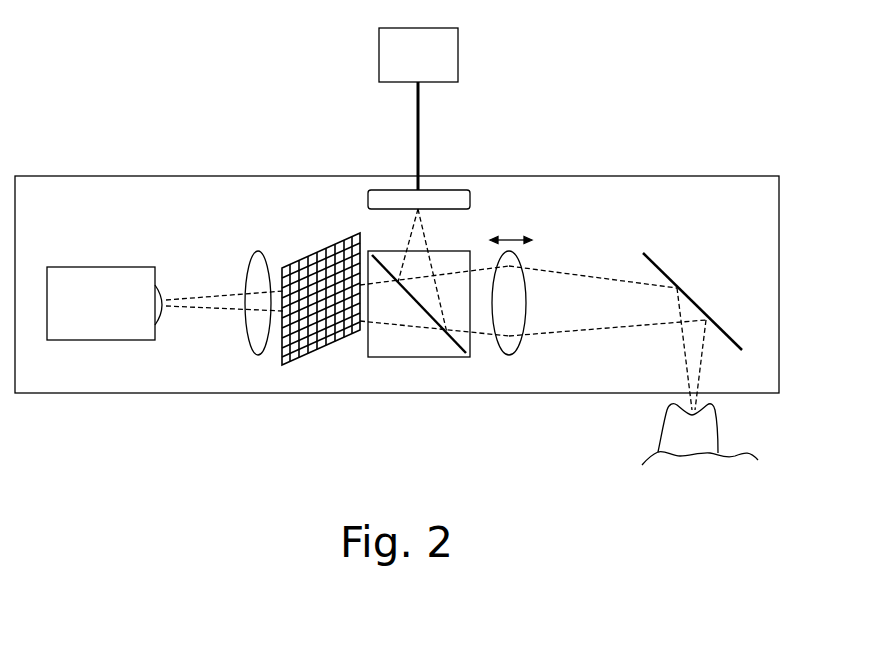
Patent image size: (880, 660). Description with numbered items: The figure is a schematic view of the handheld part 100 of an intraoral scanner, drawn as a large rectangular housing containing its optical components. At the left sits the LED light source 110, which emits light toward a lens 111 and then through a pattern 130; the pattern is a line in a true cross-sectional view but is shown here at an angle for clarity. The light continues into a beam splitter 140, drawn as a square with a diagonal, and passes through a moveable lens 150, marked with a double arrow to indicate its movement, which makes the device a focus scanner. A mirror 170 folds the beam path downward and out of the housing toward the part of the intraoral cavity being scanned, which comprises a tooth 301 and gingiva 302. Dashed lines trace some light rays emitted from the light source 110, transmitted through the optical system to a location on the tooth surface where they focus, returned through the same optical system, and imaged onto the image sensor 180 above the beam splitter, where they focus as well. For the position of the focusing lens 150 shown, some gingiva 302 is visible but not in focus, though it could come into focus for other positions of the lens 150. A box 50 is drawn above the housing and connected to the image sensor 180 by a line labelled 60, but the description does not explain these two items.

The control unit 50 is at (418, 55).
The connection to control unit 60 is at (445, 116).
The handheld part 100 is at (397, 284).
The LED light source 110 is at (104, 303).
The lens 111 is at (256, 289).
The pattern 130 is at (321, 304).
The beam splitter 140 is at (435, 375).
The moveable lens 150 is at (510, 375).
The mirror 170 is at (685, 266).
The image sensor 180 is at (358, 177).
The tooth 301 is at (688, 428).
The gingiva 302 is at (700, 470).